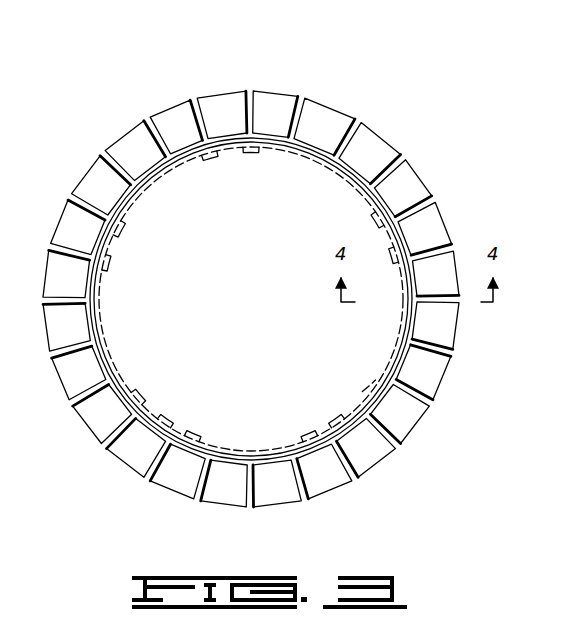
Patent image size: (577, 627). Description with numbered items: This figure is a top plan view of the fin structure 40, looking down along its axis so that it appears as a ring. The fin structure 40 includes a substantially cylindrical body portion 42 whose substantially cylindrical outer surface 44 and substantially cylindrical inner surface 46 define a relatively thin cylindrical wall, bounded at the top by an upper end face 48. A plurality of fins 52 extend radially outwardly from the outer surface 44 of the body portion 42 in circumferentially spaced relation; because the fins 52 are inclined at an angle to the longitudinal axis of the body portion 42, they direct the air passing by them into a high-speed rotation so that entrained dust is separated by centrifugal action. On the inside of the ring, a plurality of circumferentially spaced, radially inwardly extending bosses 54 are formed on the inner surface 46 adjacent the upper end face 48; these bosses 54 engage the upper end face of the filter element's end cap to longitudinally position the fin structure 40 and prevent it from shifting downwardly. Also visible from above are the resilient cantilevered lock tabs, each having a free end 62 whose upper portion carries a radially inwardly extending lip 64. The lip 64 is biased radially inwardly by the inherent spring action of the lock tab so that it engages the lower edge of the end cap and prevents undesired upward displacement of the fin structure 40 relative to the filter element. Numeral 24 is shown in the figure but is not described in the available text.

The rotor 24 is at (10, 169).
The fin structure 40 is at (448, 191).
The body portion 42 is at (406, 316).
The outer surface 44 is at (426, 336).
The inner surface 46 is at (373, 397).
The upper end face 48 is at (428, 366).
The fins 52 is at (108, 156).
The bosses 54 is at (253, 151).
The free end 62 is at (147, 187).
The lip 64 is at (177, 167).